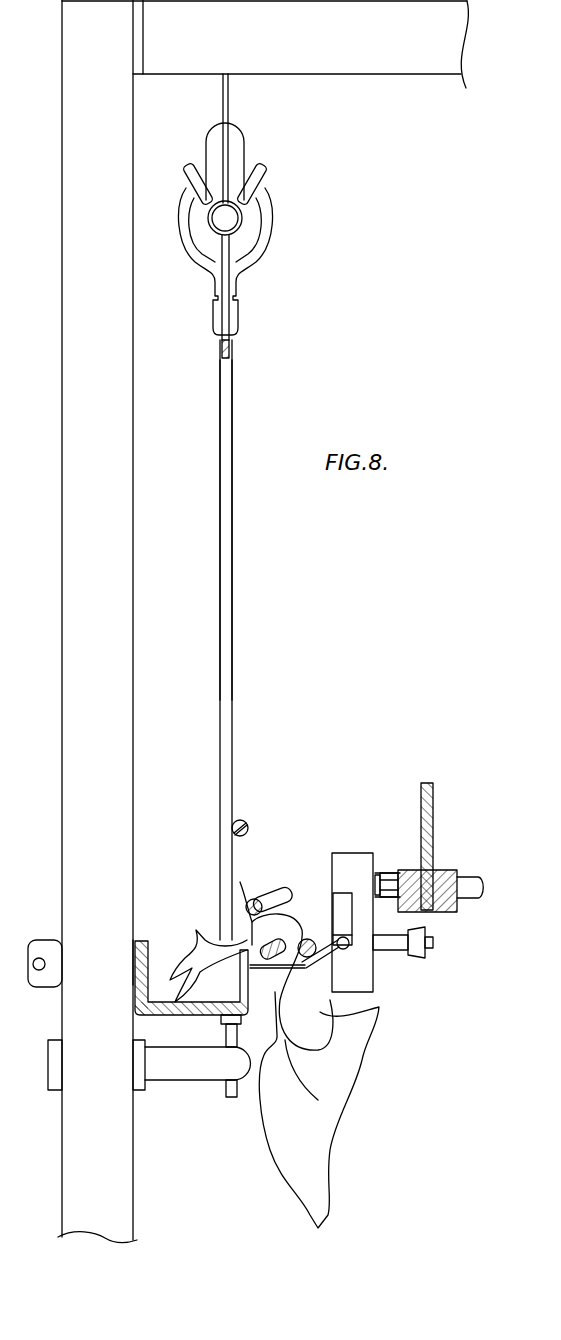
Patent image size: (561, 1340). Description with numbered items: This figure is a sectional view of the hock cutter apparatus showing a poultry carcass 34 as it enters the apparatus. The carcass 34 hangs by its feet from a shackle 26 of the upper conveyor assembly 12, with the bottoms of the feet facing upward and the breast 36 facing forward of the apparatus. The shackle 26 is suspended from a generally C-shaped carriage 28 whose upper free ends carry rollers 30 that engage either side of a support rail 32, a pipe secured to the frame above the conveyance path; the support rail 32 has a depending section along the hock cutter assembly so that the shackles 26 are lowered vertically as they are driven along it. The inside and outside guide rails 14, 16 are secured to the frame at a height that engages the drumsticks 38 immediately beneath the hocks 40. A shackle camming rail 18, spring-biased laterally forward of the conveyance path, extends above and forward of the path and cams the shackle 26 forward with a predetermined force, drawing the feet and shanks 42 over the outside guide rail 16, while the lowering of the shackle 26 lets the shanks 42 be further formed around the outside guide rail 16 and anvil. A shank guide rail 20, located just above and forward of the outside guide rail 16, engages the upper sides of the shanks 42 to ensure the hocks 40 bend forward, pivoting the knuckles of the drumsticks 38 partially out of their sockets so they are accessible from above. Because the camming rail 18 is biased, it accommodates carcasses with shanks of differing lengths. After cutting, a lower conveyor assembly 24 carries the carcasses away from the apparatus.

The upper conveyor assembly 12 is at (242, 464).
The inside guide rail 14 is at (310, 958).
The outside guide rail 16 is at (262, 972).
The shackle camming rail 18 is at (246, 824).
The shank guide rail 20 is at (256, 900).
The lower conveyor assembly 24 is at (387, 850).
The shackle 26 is at (226, 651).
The carriage 28 is at (272, 226).
The rollers 30 is at (193, 172).
The support rail 32 is at (222, 237).
The poultry carcass 34 is at (352, 1108).
The breast 36 is at (278, 1122).
The drumsticks 38 is at (322, 1015).
The hocks 40 is at (304, 906).
The shanks 42 is at (240, 930).